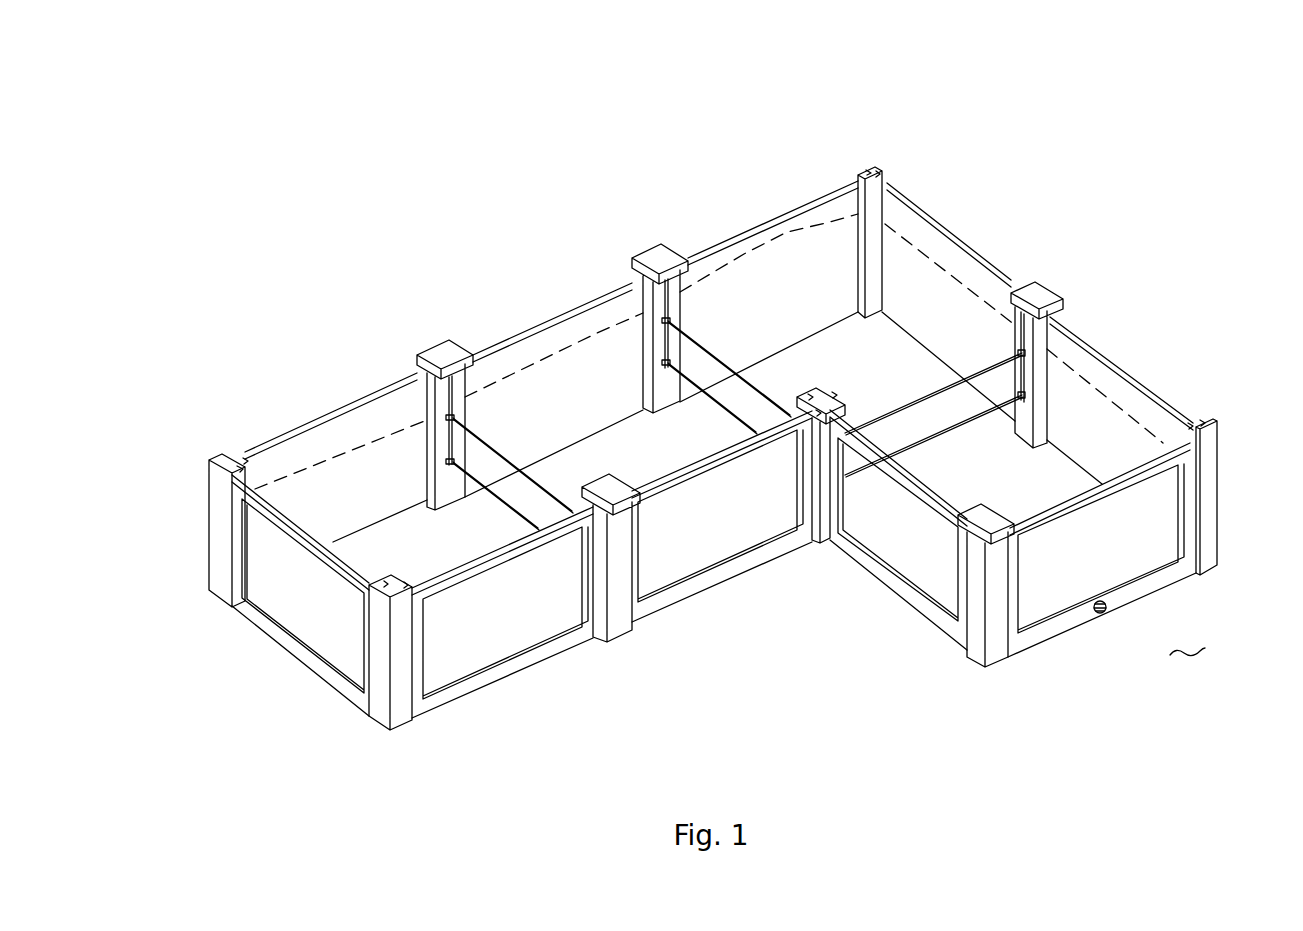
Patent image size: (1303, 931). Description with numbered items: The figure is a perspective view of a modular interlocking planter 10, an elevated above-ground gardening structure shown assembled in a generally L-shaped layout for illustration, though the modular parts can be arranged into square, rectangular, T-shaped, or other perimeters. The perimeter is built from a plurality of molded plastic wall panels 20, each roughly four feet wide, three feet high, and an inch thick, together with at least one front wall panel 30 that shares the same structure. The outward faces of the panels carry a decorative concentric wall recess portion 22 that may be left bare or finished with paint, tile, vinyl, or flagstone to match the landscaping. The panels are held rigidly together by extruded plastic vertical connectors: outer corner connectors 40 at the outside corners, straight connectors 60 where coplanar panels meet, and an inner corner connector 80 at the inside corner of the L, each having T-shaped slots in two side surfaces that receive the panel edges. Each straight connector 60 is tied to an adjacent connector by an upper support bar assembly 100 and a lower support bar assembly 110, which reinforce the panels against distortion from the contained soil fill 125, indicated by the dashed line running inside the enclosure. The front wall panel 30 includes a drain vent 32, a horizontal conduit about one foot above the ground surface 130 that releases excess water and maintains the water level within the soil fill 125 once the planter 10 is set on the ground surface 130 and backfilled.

The modular interlocking planter 10 is at (235, 141).
The wall panel 20 is at (777, 220).
The wall recess portion 22 is at (314, 590).
The front wall panel 30 is at (1023, 642).
The drain vent 32 is at (1099, 614).
The outer corner connector 40 is at (870, 208).
The straight connector 60 is at (660, 273).
The inner corner connector 80 is at (816, 546).
The upper support bar assembly 100 is at (533, 472).
The lower support bar assembly 110 is at (497, 503).
The soil fill 125 is at (735, 265).
The ground surface 130 is at (1180, 668).